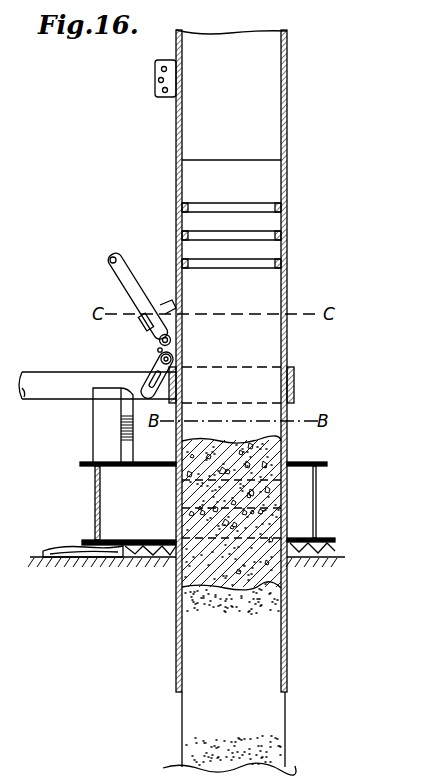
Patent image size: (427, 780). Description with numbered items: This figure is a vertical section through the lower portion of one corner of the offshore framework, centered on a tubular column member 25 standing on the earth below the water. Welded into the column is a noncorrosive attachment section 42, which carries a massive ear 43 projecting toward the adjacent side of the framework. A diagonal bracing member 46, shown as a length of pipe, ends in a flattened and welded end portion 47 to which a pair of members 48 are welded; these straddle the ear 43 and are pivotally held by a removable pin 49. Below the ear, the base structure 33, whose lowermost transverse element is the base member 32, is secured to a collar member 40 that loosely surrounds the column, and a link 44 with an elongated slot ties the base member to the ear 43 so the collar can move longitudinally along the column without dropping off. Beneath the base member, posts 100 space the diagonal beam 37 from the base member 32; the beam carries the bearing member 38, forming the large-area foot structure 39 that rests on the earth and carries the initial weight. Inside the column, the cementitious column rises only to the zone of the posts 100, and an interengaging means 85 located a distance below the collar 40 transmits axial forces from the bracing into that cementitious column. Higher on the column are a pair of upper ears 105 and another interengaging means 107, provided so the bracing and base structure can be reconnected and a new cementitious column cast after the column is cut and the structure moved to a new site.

The tubular column member 25 is at (287, 103).
The attachment section 42 is at (287, 185).
The upper ears 105 is at (158, 98).
The interengaging means 107 is at (190, 203).
The diagonal bracing member 46 is at (112, 258).
The members 48 is at (145, 321).
The end portion 47 is at (172, 308).
The removable pin 49 is at (172, 340).
The ear 43 is at (158, 348).
The links 44 is at (158, 366).
The base structure 33 is at (60, 372).
The base member 32 is at (60, 400).
The posts 100 is at (100, 440).
The collar member 40 is at (296, 383).
The beam 37 is at (95, 486).
The bearing member 38 is at (85, 545).
The foot structure 39 is at (100, 560).
The interengaging means 85 is at (288, 483).